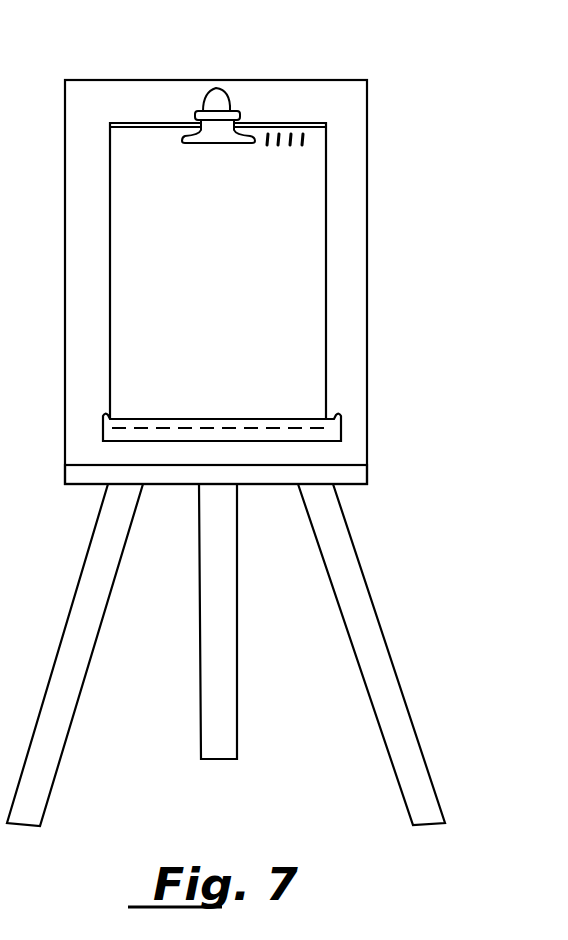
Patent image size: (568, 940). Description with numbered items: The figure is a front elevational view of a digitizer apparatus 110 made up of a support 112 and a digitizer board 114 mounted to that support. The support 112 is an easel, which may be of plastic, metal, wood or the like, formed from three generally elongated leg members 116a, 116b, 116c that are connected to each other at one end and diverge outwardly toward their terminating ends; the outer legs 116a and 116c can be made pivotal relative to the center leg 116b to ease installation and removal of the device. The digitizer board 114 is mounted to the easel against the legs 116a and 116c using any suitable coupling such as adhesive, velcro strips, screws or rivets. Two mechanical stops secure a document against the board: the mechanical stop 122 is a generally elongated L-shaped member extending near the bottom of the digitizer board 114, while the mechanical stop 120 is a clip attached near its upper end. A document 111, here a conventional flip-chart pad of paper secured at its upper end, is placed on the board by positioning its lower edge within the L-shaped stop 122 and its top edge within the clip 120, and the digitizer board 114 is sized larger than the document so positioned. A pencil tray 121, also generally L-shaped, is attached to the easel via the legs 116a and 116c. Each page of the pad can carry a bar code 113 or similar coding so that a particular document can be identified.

The apparatus 110 is at (58, 303).
The document 111 is at (128, 188).
The support 112 is at (358, 559).
The bar code 113 is at (300, 152).
The digitizer board 114 is at (369, 93).
The leg member 116a is at (65, 697).
The leg member 116b is at (228, 694).
The leg member 116c is at (385, 693).
The mechanical stop 120 is at (218, 100).
The pencil tray 121 is at (80, 475).
The mechanical stop 122 is at (342, 420).